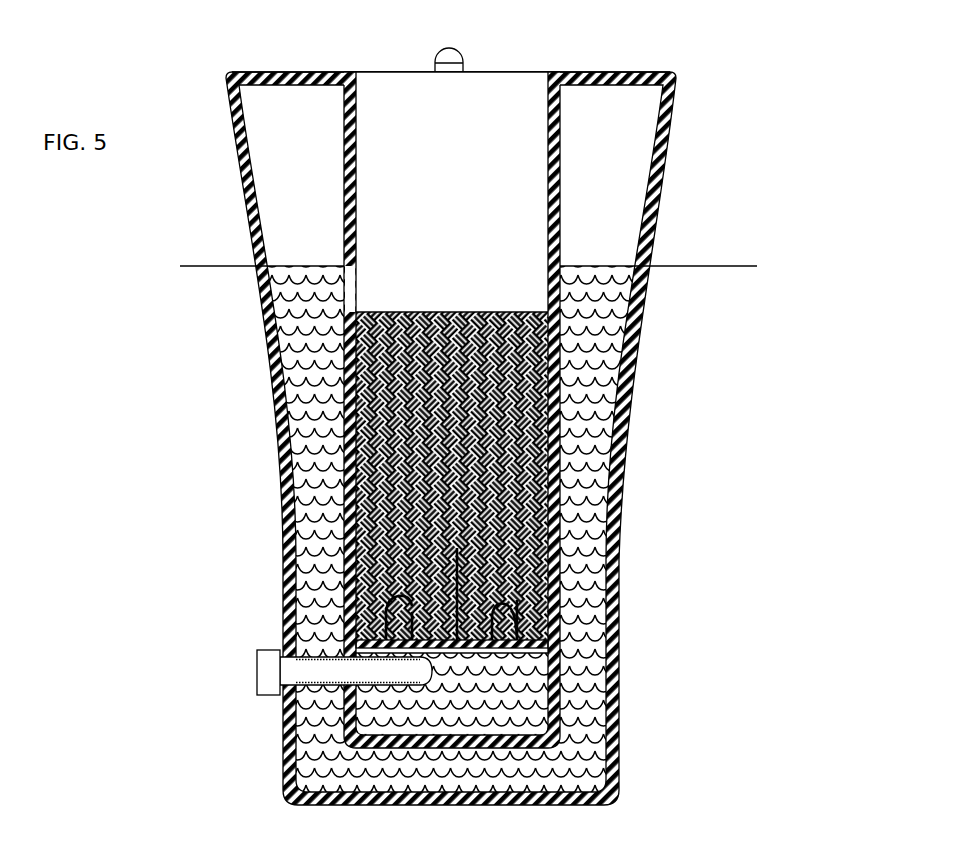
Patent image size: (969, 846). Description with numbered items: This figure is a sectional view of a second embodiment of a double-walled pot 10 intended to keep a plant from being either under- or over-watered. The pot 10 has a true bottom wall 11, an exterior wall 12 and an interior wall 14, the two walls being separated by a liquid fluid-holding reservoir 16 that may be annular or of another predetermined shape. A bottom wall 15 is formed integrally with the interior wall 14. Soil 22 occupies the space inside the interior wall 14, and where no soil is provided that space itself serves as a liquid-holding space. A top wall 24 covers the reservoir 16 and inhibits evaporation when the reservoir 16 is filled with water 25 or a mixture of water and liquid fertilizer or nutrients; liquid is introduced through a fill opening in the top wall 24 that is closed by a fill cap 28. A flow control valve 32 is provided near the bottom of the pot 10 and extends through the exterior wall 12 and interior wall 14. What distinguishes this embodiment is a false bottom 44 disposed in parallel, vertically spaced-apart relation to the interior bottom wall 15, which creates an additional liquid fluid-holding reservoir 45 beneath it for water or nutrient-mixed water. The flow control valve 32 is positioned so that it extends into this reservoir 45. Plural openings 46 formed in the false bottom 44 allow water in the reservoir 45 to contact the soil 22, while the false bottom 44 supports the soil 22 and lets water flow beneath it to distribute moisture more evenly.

The pot 10 is at (735, 69).
The true bottom wall 11 is at (445, 805).
The exterior wall 12 is at (245, 196).
The interior wall 14 is at (350, 142).
The bottom wall 15 is at (403, 752).
The liquid fluid-holding reservoir 16 is at (312, 189).
The soil 22 is at (503, 458).
The top wall 24 is at (302, 72).
The water 25 is at (320, 323).
The fill cap 28 is at (452, 47).
The flow control valve 32 is at (256, 642).
The false bottom 44 is at (441, 552).
The additional liquid fluid-holding reservoir 45 is at (484, 706).
The openings 46 is at (440, 594).